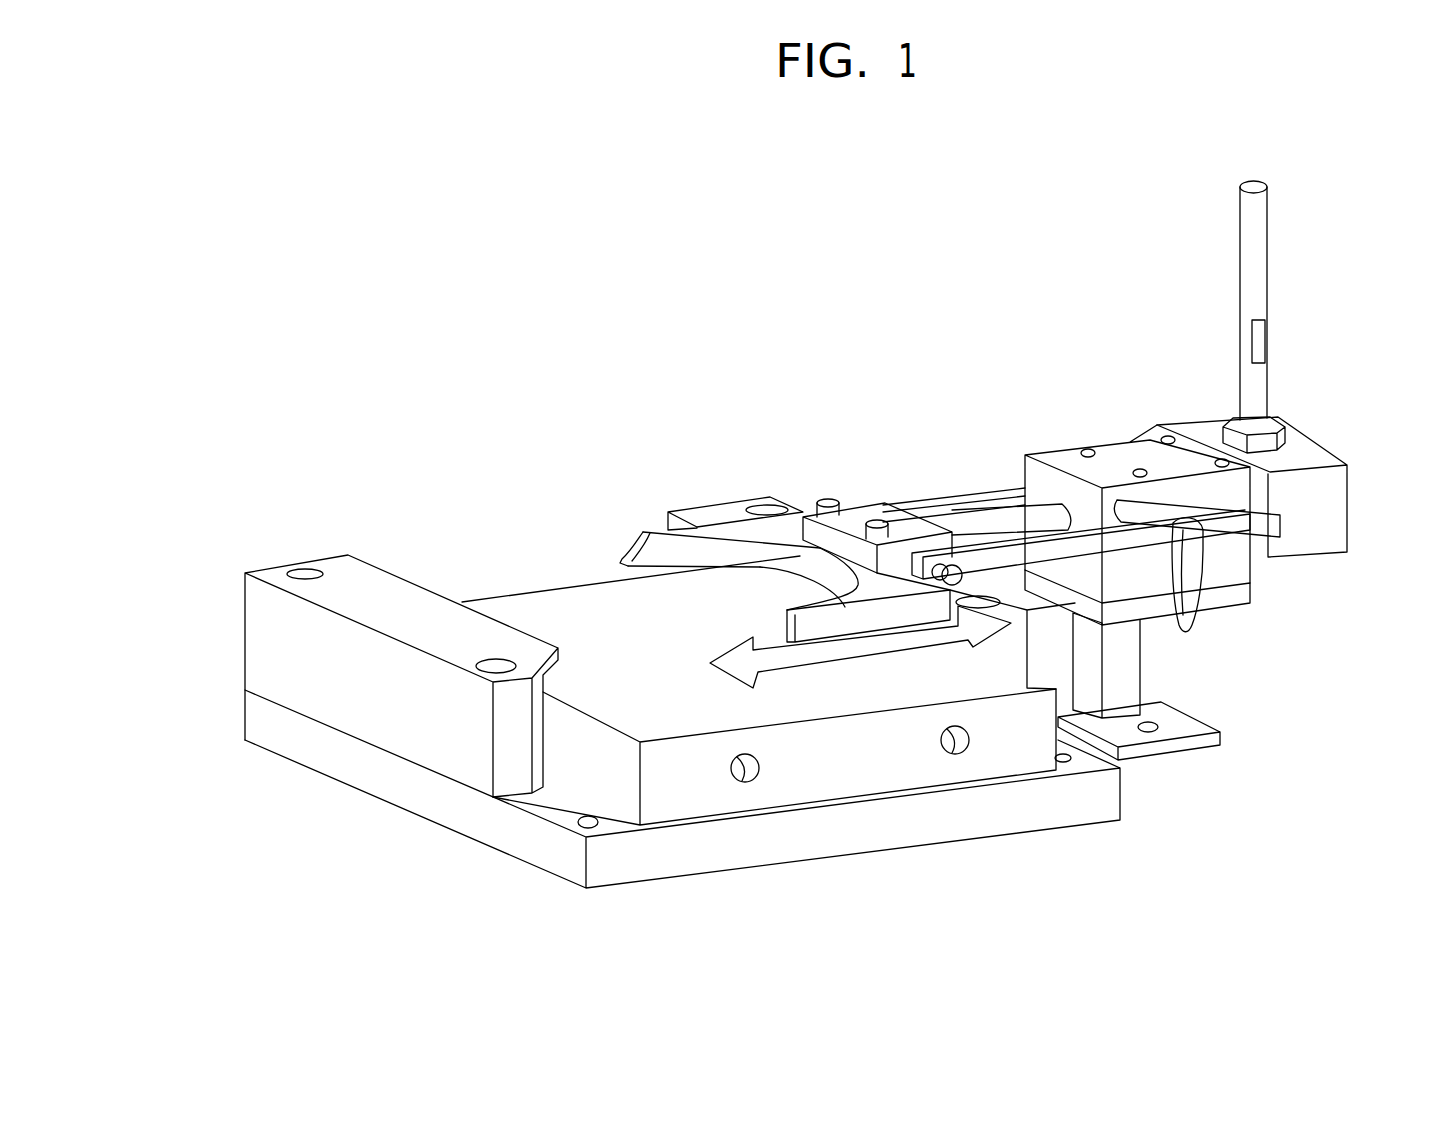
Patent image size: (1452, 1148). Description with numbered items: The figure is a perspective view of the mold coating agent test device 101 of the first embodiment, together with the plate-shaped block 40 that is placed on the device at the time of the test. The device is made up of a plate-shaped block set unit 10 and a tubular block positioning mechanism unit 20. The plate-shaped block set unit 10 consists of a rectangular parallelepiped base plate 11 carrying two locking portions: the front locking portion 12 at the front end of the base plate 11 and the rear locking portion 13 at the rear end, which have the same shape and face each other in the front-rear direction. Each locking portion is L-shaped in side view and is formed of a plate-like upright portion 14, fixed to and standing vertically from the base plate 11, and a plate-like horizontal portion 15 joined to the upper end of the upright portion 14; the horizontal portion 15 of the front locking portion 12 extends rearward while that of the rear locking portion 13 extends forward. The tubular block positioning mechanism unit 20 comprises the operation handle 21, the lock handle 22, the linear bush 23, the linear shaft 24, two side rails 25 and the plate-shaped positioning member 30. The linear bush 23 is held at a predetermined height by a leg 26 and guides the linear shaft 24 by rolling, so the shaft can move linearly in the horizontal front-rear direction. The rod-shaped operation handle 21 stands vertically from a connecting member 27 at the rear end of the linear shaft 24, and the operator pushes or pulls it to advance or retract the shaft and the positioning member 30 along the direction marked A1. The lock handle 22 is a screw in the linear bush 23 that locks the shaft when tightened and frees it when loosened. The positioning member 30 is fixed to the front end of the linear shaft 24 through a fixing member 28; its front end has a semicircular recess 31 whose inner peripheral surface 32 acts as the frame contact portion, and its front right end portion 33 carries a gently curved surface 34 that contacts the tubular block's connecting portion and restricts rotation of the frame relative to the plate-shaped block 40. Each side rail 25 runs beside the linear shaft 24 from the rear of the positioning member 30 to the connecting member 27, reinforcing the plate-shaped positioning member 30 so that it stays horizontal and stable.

The mold coating agent test device 101 is at (1327, 154).
The plate-shaped block set unit 10 is at (218, 742).
The base plate 11 is at (547, 848).
The front locking portion 12 is at (277, 488).
The rear locking portion 13 is at (700, 512).
The upright portion 14 is at (265, 638).
The horizontal portion 15 is at (283, 577).
The tubular block positioning mechanism unit 20 is at (1360, 583).
The operation handle 21 is at (1258, 247).
The lock handle 22 is at (1192, 582).
The linear bush 23 is at (1133, 455).
The linear shaft 24 is at (1002, 523).
The side rail 25 is at (930, 502).
The leg 26 is at (1130, 695).
The connecting member 27 is at (1329, 488).
The fixing member 28 is at (857, 513).
The positioning member 30 is at (740, 527).
The recess 31 is at (780, 558).
The inner peripheral surface 32 is at (750, 555).
The front right end portion 33 is at (655, 527).
The curved surface 34 is at (637, 543).
The plate-shaped block 40 is at (693, 790).
The moving direction A1 is at (903, 633).